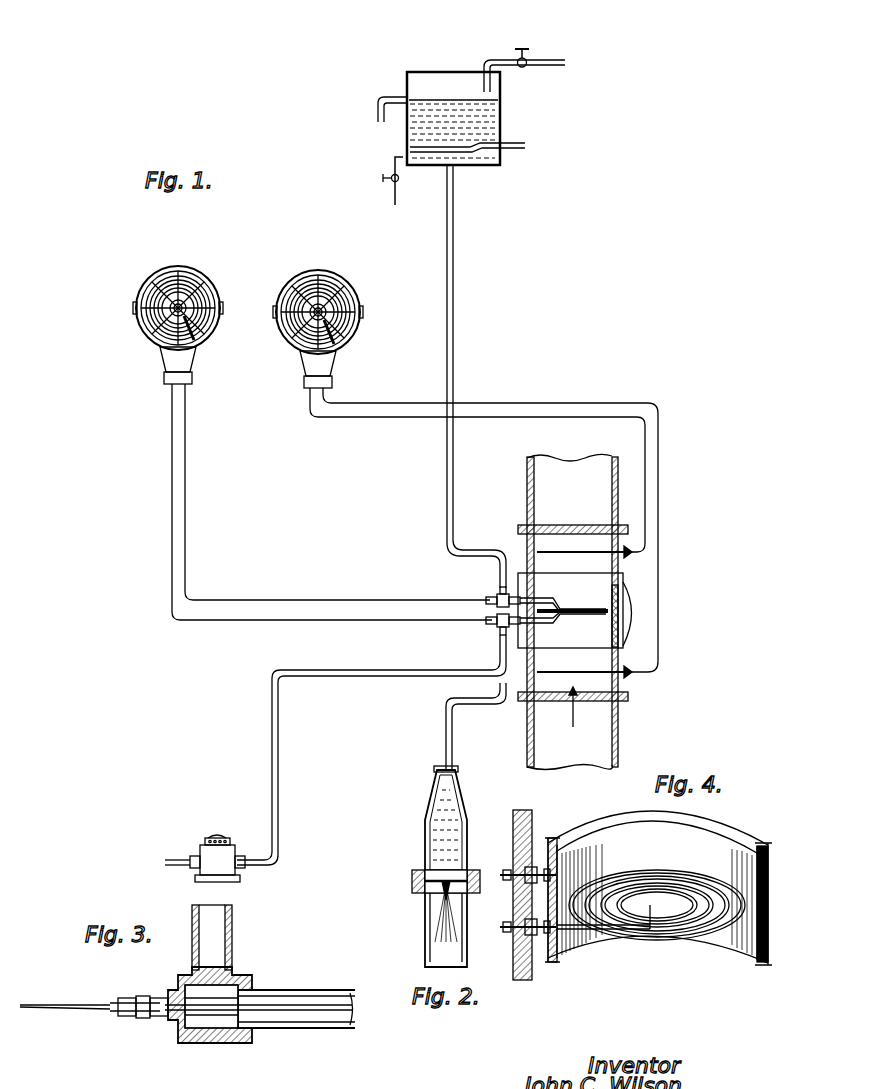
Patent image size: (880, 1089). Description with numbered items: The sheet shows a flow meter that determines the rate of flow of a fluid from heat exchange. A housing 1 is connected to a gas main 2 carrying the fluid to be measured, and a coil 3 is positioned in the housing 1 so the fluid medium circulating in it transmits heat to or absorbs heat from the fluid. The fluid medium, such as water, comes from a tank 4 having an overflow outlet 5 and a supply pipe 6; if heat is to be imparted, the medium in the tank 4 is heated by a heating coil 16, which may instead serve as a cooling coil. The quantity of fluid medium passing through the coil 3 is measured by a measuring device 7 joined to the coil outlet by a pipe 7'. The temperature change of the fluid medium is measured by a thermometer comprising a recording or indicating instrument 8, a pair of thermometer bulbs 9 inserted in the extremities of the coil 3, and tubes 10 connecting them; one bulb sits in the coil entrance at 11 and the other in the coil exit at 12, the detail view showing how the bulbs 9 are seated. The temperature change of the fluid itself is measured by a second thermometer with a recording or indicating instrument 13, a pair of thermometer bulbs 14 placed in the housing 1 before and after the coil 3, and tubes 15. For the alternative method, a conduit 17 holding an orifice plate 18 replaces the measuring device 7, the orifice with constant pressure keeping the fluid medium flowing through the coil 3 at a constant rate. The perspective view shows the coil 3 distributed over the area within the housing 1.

In FIG. 1, the housing 1 is at (527, 539).
In FIG. 4, the housing 1 is at (745, 940).
In FIG. 1, the gas main 2 is at (550, 487).
In FIG. 1, the coil 3 is at (607, 613).
In FIG. 4, the coil 3 is at (690, 876).
In FIG. 1, the tank 4 is at (500, 116).
In FIG. 1, the overflow outlet 5 is at (377, 118).
In FIG. 1, the supply pipe 6 is at (545, 60).
In FIG. 1, the measuring device 7 is at (335, 758).
In FIG. 1, the pipe 7' is at (415, 724).
In FIG. 1, the recording or indicating instrument 8 is at (152, 336).
In FIG. 3, the thermometer bulbs 9 is at (262, 1004).
In FIG. 1, the tubes 10 is at (180, 563).
In FIG. 4, the tubes 10 is at (505, 878).
In FIG. 1, the entrance of the coil 11 is at (496, 596).
In FIG. 3, the entrance of the coil 11 is at (236, 974).
In FIG. 1, the exit of the coil 12 is at (497, 630).
In FIG. 1, the recording or indicating instrument 13 is at (347, 336).
In FIG. 1, the thermometer bulbs 14 is at (584, 628).
In FIG. 1, the tubes 15 is at (552, 417).
In FIG. 1, the heating coil 16 is at (462, 156).
In FIG. 2, the conduit 17 is at (425, 845).
In FIG. 2, the orifice plate 18 is at (452, 880).